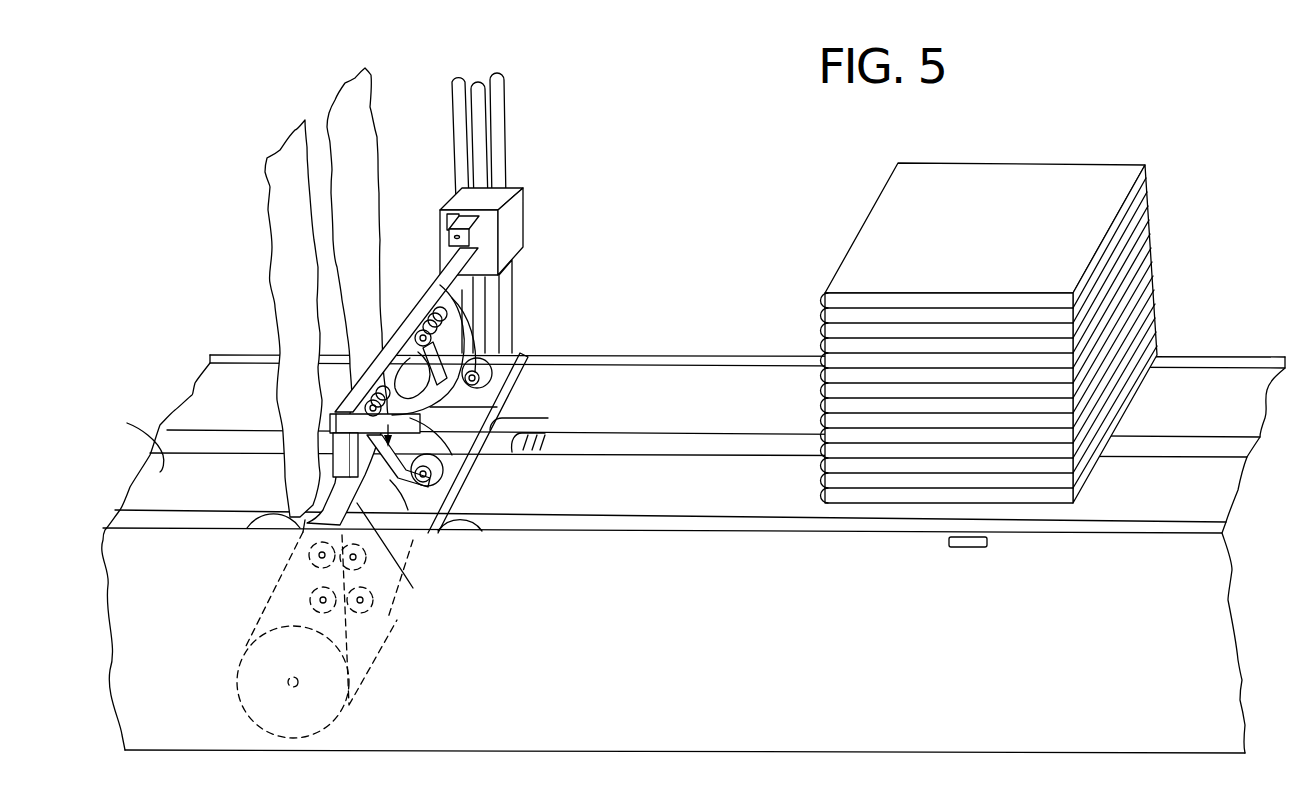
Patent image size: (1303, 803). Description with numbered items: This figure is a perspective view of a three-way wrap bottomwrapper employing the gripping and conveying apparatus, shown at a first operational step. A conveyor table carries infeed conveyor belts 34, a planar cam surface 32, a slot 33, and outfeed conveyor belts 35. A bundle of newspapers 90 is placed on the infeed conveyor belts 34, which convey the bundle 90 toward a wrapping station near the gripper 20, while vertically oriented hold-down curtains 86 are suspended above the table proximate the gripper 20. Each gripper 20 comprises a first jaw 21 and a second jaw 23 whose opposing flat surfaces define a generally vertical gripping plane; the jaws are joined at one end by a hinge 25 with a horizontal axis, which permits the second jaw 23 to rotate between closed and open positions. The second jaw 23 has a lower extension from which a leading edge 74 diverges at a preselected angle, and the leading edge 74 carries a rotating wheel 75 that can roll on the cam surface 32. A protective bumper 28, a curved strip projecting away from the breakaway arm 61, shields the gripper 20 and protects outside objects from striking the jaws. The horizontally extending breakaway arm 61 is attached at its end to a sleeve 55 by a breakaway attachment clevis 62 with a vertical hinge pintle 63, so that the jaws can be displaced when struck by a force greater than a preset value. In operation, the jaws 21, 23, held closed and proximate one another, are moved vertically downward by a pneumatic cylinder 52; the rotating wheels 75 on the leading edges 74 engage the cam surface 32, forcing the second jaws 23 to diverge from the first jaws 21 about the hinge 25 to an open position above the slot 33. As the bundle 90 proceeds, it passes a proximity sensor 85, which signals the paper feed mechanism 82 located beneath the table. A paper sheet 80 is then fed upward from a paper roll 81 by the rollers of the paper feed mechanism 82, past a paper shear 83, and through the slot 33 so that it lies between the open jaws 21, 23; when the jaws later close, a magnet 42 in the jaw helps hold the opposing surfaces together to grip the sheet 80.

The pneumatic cylinder 52 is at (480, 78).
The hold-down curtains 86 is at (366, 143).
The breakaway attachment clevis 62 is at (448, 215).
The sleeve 55 is at (522, 228).
The breakaway arm 61 is at (440, 268).
The hinge pintle 63 is at (470, 236).
The gripper 20 is at (383, 323).
The hinge 25 is at (353, 372).
The rotating wheel 75 is at (517, 362).
The protective bumper 28 is at (487, 408).
The cam surface 32 is at (437, 444).
The magnet 42 is at (374, 458).
The leading edge 74 is at (441, 531).
The second jaw 23 is at (348, 440).
The first jaw 21 is at (335, 458).
The outfeed conveyor belts 35 is at (190, 416).
The slot 33 is at (305, 533).
The paper shear 83 is at (320, 570).
The paper sheet 80 is at (413, 588).
The paper feed mechanism 82 is at (380, 630).
The paper roll 81 is at (298, 686).
The infeed conveyor belts 34 is at (690, 380).
The bundle of newspapers 90 is at (873, 195).
The proximity sensor 85 is at (968, 548).